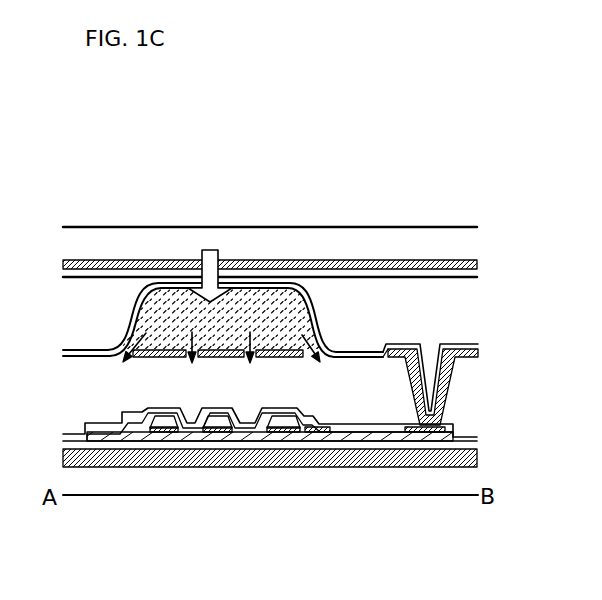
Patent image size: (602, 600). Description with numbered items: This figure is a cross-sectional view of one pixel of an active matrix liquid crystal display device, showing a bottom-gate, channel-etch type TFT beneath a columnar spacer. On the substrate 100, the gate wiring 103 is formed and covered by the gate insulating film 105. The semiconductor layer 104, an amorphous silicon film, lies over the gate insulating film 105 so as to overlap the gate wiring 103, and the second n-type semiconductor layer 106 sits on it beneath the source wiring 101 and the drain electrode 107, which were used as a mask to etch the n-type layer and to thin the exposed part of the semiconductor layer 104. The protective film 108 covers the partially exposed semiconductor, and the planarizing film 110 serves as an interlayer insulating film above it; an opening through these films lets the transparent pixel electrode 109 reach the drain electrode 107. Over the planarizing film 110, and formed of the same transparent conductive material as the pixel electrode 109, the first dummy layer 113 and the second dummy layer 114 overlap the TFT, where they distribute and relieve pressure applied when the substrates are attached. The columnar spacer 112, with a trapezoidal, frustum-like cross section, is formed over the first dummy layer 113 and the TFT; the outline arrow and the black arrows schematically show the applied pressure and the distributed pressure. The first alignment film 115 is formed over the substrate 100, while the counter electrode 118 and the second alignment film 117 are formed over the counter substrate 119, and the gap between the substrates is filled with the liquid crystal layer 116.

The substrate 100 is at (422, 495).
The source wiring 101 is at (105, 462).
The gate wiring 103 is at (357, 442).
The semiconductor layer 104 is at (277, 414).
The gate insulating film 105 is at (477, 448).
The second n-type semiconductor layer 106 is at (173, 440).
The drain electrode 107 is at (223, 414).
The protective film 108 is at (478, 436).
The pixel electrode 109 is at (456, 361).
The planarizing film 110 is at (348, 384).
The columnar spacer 112 is at (186, 298).
The first dummy layer 113 is at (112, 345).
The second dummy layer 114 is at (239, 350).
The first alignment film 115 is at (478, 346).
The liquid crystal layer 116 is at (465, 314).
The second alignment film 117 is at (478, 279).
The counter electrode 118 is at (478, 266).
The counter substrate 119 is at (448, 233).